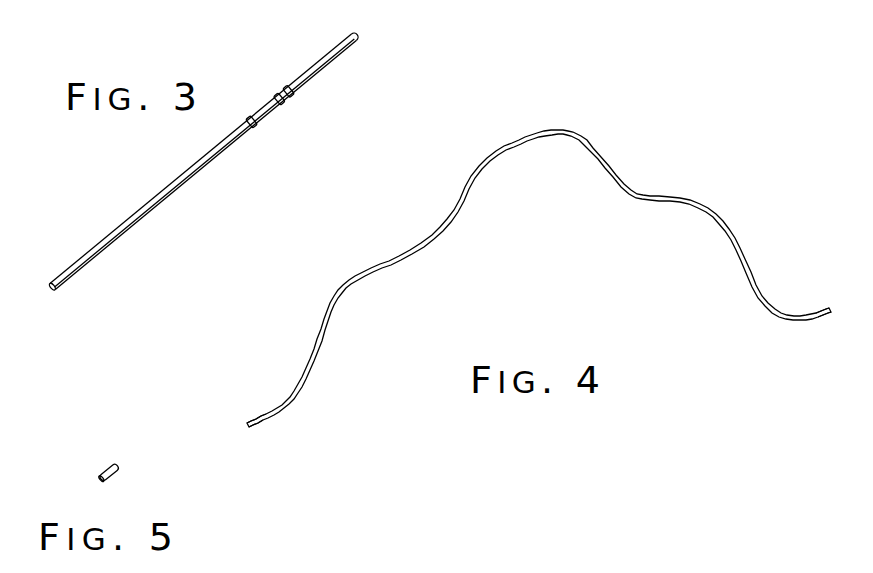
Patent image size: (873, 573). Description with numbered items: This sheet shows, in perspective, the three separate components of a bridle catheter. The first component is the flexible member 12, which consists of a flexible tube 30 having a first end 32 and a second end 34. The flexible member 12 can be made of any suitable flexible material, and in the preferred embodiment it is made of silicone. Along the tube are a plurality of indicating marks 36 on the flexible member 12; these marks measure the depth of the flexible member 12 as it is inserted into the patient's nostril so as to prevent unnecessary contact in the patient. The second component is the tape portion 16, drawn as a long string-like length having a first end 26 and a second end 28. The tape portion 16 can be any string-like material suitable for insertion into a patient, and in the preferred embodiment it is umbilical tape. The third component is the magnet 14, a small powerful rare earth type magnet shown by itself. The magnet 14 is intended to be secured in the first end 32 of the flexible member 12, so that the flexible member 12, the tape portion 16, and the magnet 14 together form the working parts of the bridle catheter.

In FIG. 3, the flexible member 12 is at (163, 197).
In FIG. 3, the flexible tube 30 is at (127, 232).
In FIG. 3, the first end 32 is at (53, 291).
In FIG. 3, the second end 34 is at (356, 32).
In FIG. 3, the indicating marks 36 is at (257, 123).
In FIG. 4, the tape portion 16 is at (467, 195).
In FIG. 4, the first end 26 is at (250, 427).
In FIG. 4, the second end 28 is at (820, 319).
In FIG. 5, the magnet 14 is at (115, 478).